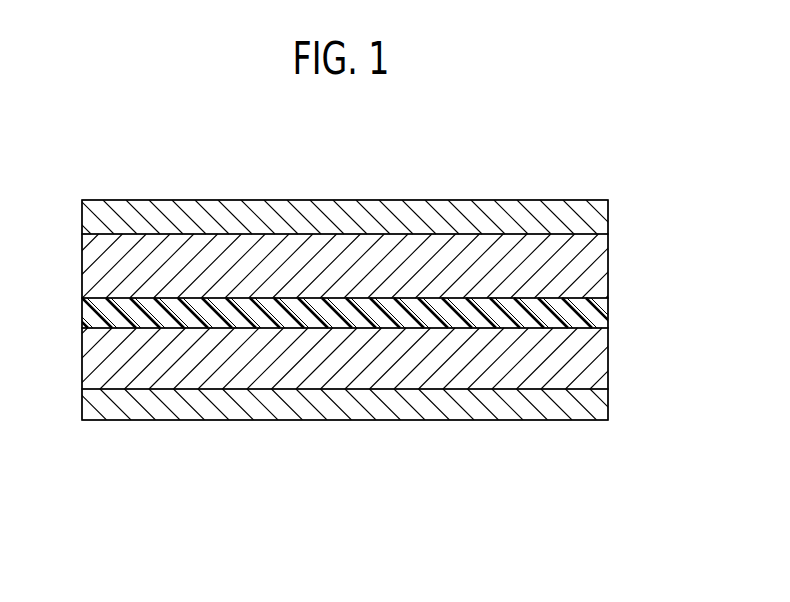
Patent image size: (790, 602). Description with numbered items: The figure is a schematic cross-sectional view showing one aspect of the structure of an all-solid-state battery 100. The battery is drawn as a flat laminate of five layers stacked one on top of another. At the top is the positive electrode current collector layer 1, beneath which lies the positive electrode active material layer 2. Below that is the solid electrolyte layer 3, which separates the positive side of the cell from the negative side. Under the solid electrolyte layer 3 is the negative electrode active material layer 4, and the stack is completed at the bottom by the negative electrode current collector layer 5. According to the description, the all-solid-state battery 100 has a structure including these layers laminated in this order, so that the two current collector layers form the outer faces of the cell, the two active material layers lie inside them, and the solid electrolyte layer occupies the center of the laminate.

The all-solid-state battery 100 is at (98, 182).
The positive electrode current collector layer 1 is at (597, 220).
The positive electrode active material layer 2 is at (597, 262).
The solid electrolyte layer 3 is at (593, 313).
The negative electrode active material layer 4 is at (600, 362).
The negative electrode current collector layer 5 is at (605, 410).